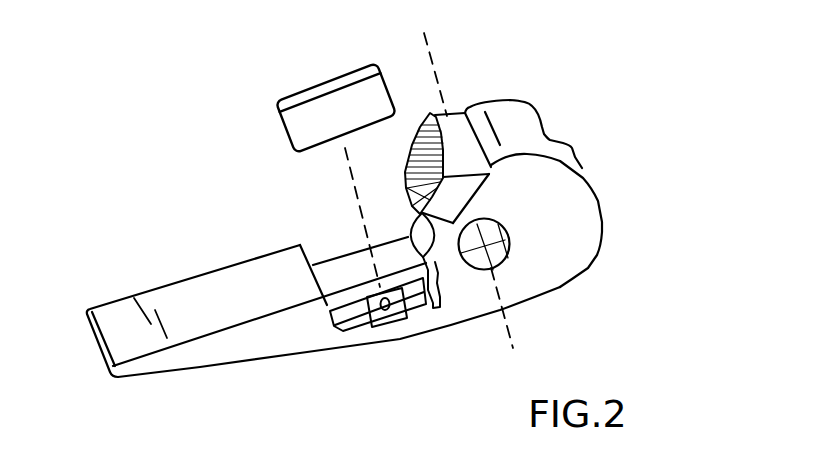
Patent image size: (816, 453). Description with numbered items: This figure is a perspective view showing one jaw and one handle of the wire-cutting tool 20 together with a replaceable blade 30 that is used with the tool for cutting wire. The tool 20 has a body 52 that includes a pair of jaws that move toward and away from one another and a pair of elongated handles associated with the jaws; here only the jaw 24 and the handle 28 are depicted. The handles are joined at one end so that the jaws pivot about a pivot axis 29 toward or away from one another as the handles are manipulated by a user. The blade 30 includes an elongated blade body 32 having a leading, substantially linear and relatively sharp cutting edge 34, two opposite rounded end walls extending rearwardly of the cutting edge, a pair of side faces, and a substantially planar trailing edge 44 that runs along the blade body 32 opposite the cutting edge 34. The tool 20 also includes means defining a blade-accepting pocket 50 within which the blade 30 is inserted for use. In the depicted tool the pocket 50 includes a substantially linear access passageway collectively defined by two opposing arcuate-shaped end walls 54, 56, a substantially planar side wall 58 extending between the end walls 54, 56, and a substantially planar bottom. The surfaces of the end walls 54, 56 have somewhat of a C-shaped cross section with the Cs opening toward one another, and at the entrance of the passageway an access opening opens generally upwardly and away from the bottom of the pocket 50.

The tool 20 is at (603, 170).
The jaw 24 is at (180, 282).
The handle 28 is at (123, 310).
The pivot axis 29 is at (513, 333).
The cutting blade 30 is at (289, 123).
The blade body 32 is at (343, 123).
The cutting edge 34 is at (305, 90).
The trailing edge 44 is at (312, 152).
The blade-accepting pocket 50 is at (342, 296).
The body 52 is at (246, 345).
The end wall 54 is at (358, 327).
The end wall 56 is at (433, 308).
The side wall 58 is at (407, 184).